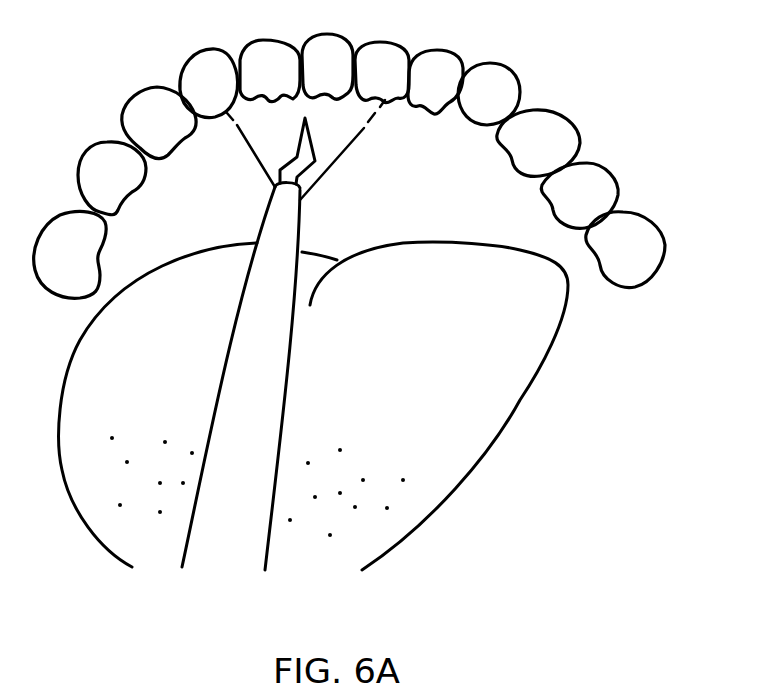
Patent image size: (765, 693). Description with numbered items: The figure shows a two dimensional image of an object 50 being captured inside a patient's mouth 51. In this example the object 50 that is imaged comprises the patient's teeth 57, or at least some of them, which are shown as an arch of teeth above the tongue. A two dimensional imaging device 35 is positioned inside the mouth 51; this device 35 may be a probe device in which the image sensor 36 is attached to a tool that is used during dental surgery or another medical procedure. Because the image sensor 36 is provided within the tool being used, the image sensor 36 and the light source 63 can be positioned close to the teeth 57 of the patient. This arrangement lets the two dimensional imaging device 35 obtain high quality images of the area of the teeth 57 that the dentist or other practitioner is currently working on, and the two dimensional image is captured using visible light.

The two dimensional imaging device 35 is at (220, 373).
The image sensor 36 is at (281, 158).
The object 50 is at (374, 208).
The mouth 51 is at (578, 313).
The teeth 57 is at (540, 134).
The light source 63 is at (307, 182).